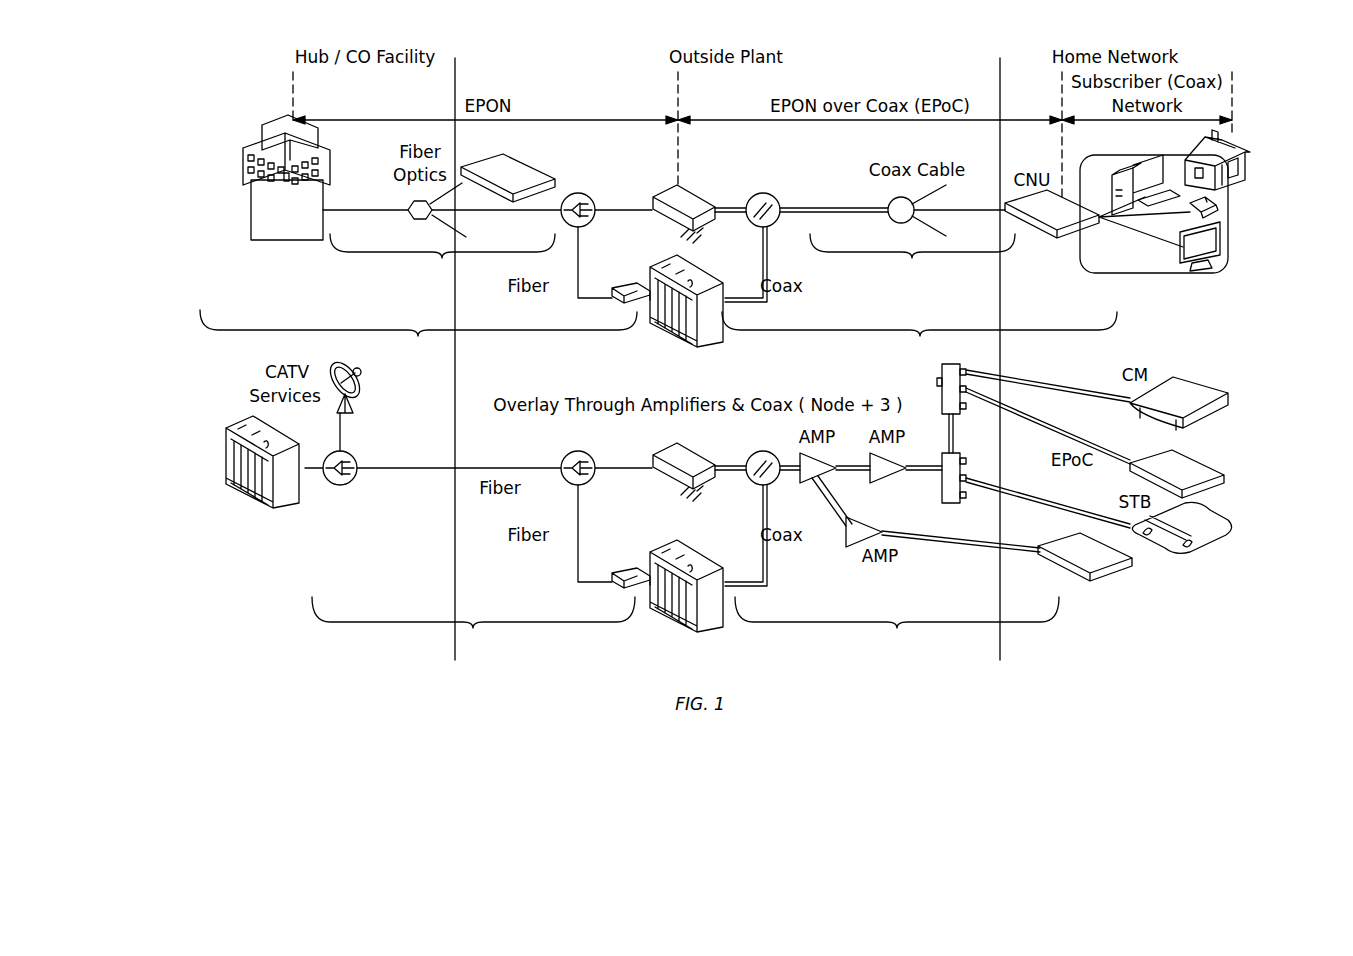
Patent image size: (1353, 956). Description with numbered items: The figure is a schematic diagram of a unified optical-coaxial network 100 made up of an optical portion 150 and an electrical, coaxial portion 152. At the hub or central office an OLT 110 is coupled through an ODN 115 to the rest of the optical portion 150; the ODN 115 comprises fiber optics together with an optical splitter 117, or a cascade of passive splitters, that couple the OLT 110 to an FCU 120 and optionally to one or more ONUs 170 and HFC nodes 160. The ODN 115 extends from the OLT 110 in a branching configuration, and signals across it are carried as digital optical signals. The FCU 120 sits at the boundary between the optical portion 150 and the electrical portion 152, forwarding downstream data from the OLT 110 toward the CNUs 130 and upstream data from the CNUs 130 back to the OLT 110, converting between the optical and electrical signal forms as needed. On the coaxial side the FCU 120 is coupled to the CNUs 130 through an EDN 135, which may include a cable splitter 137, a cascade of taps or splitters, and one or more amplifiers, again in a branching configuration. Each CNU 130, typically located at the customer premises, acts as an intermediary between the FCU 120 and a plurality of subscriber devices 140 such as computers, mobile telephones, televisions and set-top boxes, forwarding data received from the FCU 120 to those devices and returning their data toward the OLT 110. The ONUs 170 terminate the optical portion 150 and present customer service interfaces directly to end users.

The unified optical-coaxial network 100 is at (198, 86).
The OLT 110 is at (251, 205).
The ODN 115 is at (473, 443).
The optical splitter 117 is at (405, 203).
The FCU 120 is at (658, 258).
The CNU 130 is at (1058, 236).
The EDN 135 is at (897, 443).
The cable splitter 137 is at (888, 200).
The subscriber device 140 is at (1140, 163).
The optical portion 150 is at (418, 335).
The electrical portion 152 is at (919, 336).
The HFC node 160 is at (703, 193).
The ONU 170 is at (528, 167).